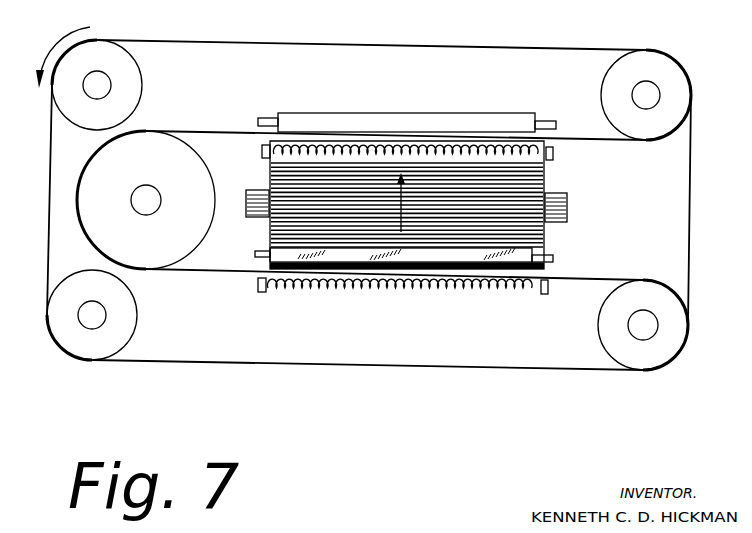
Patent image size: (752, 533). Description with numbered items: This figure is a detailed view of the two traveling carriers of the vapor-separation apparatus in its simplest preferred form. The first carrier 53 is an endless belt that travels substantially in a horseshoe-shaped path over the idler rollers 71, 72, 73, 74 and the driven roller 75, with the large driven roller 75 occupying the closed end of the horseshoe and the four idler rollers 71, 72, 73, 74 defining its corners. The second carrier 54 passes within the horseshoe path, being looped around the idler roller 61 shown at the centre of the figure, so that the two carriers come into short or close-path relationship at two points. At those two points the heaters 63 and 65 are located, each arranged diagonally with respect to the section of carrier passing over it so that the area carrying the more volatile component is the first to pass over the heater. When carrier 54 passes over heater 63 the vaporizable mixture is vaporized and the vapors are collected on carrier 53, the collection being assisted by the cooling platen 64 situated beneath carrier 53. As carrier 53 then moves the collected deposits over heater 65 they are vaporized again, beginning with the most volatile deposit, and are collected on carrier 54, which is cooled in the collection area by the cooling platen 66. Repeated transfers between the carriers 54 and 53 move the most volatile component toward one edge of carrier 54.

The carrier 53 is at (447, 45).
The carrier 54 is at (536, 274).
The idler roller 61 is at (566, 192).
The heater 63 is at (340, 158).
The cooling platen 64 is at (378, 113).
The heater 65 is at (432, 291).
The cooling platen 66 is at (362, 250).
The idler roller 71 is at (142, 87).
The idler roller 72 is at (611, 87).
The idler roller 73 is at (608, 336).
The idler roller 74 is at (135, 327).
The driven roller 75 is at (204, 236).